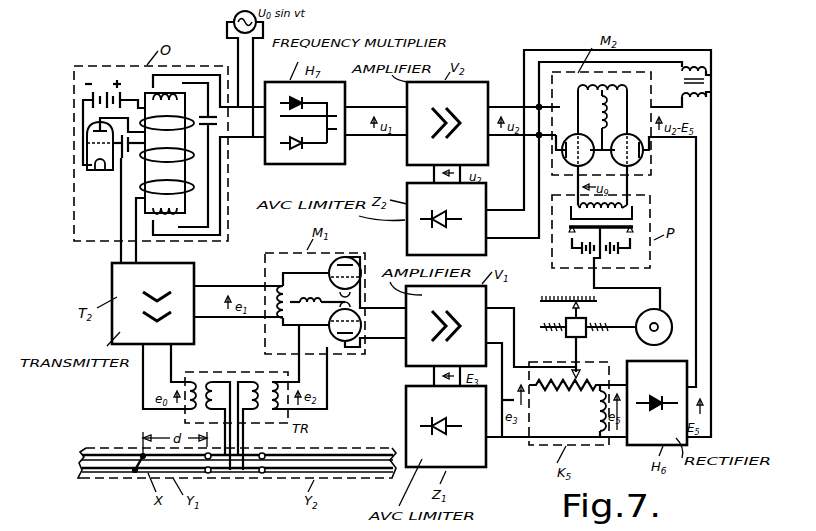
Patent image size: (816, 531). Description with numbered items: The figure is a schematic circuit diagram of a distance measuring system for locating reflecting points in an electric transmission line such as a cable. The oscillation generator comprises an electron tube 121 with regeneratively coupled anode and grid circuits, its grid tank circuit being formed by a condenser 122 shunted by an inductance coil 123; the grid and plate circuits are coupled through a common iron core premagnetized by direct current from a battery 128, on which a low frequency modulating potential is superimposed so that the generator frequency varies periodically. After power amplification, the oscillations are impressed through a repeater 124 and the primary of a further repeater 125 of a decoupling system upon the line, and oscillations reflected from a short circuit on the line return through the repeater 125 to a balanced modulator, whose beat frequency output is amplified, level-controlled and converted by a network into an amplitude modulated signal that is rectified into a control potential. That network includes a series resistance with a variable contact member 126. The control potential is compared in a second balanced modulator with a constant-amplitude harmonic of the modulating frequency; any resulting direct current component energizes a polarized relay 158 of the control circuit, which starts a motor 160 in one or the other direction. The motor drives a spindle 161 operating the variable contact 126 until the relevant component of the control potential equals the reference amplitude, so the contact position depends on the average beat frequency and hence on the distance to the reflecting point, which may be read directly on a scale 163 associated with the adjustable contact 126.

The electron tube 121 is at (87, 153).
The condenser 122 is at (122, 162).
The inductance coil 123 is at (192, 163).
The repeater 124 is at (207, 383).
The repeater 125 is at (265, 383).
The variable contact member 126 is at (578, 367).
The battery 128 is at (202, 113).
The polarized relay 158 is at (616, 220).
The motor 160 is at (661, 318).
The spindle 161 is at (589, 330).
The scale 163 is at (572, 296).